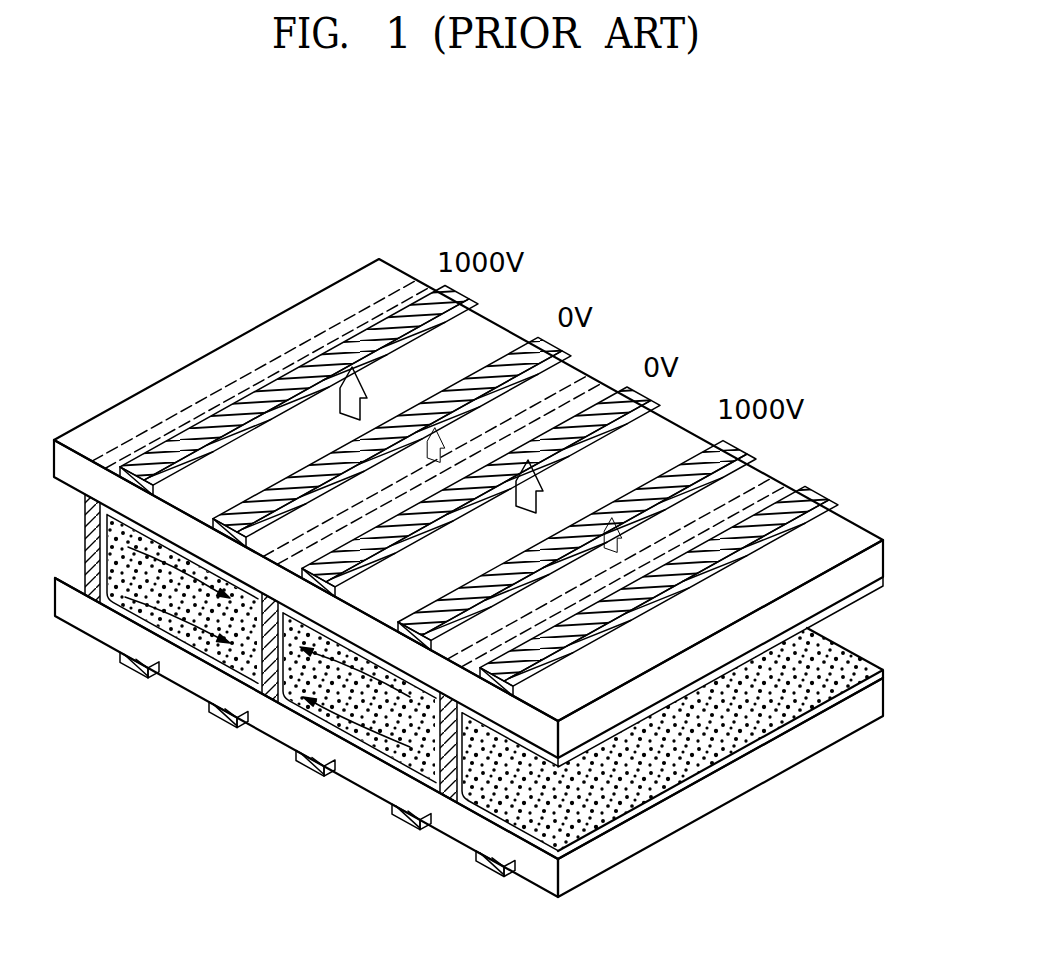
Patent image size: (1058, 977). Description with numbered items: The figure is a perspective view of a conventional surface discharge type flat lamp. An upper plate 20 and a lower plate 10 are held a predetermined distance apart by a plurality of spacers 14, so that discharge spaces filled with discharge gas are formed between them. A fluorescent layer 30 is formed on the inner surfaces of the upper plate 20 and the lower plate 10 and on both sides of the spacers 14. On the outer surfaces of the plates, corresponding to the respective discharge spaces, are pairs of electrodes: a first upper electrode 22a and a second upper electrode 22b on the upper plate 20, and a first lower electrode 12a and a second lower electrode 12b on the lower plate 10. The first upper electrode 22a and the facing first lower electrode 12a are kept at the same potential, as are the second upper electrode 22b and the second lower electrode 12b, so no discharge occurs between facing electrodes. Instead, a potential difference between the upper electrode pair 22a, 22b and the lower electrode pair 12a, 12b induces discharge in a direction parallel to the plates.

The lower plate 10 is at (545, 880).
The first lower electrode 12a is at (407, 824).
The second lower electrode 12b is at (318, 767).
The spacer 14 is at (268, 690).
The upper plate 20 is at (852, 582).
The first upper electrode 22a is at (713, 452).
The second upper electrode 22b is at (612, 398).
The fluorescent layer 30 is at (537, 852).